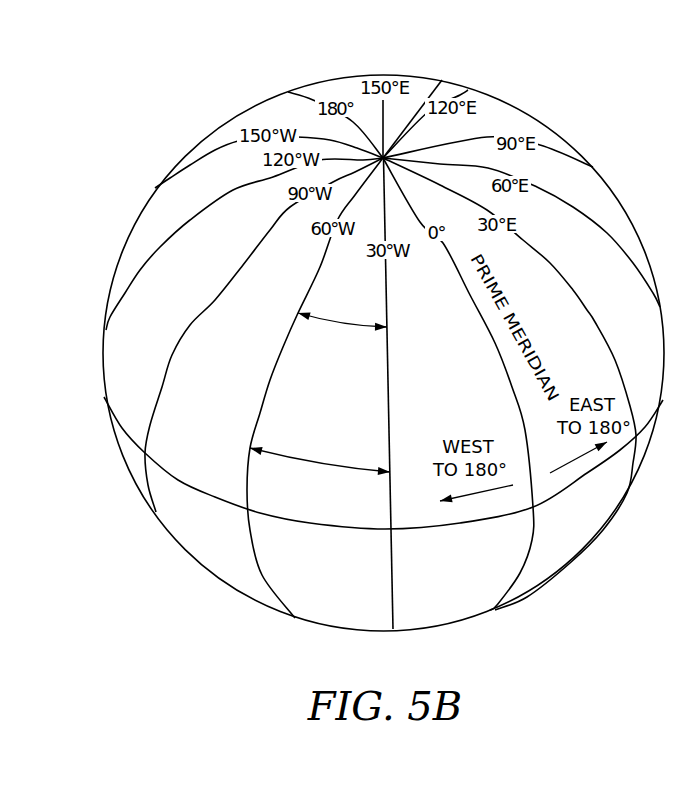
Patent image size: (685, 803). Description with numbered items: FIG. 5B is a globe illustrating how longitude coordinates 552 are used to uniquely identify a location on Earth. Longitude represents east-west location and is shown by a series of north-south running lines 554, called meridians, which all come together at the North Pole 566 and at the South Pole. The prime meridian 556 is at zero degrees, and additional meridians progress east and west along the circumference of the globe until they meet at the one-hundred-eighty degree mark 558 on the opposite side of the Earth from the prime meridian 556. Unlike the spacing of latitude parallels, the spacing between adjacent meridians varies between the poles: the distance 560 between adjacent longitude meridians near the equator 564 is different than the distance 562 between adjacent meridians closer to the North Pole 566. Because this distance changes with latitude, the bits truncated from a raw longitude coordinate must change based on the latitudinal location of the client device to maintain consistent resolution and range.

The longitude coordinates 552 is at (604, 48).
The north-south running lines 554 is at (142, 295).
The prime meridian 556 is at (500, 366).
The 180° mark 558 is at (292, 93).
The distance between adjacent longitude meridians near the equator 560 is at (323, 465).
The distance between adjacent longitude meridians closer to the North Pole 562 is at (347, 322).
The equator 564 is at (436, 530).
The North Pole 566 is at (468, 92).